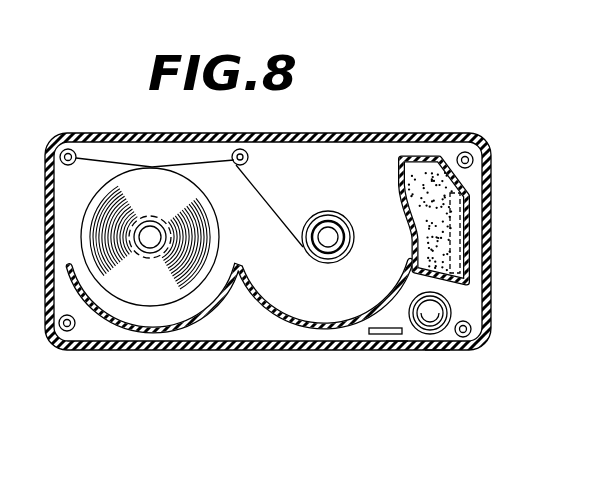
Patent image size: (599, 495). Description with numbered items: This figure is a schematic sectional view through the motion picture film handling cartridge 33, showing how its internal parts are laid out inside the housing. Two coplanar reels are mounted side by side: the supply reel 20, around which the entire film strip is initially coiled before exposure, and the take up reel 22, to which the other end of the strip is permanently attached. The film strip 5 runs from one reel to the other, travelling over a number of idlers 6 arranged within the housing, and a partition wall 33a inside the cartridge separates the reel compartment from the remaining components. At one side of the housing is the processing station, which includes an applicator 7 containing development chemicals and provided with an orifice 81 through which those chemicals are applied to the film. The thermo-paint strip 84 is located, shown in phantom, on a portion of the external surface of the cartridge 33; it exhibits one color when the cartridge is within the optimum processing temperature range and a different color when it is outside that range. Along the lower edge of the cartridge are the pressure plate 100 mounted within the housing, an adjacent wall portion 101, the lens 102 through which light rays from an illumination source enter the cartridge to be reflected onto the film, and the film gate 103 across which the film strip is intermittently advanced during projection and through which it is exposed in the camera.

The magnetic tape 5 is at (270, 206).
The idlers 6 is at (69, 148).
The applicator 7 is at (428, 208).
The supply reel 20 is at (335, 225).
The take up reel 22 is at (150, 226).
The motion picture film handling cartridge 33 is at (368, 136).
The partition wall 33a is at (325, 327).
The orifice 81 is at (468, 277).
The reversal thermo-paint strip 84 is at (455, 228).
The pressure plate 100 is at (382, 337).
The bottom wall 101 is at (396, 348).
The lens 102 is at (420, 304).
The film gate 103 is at (437, 349).